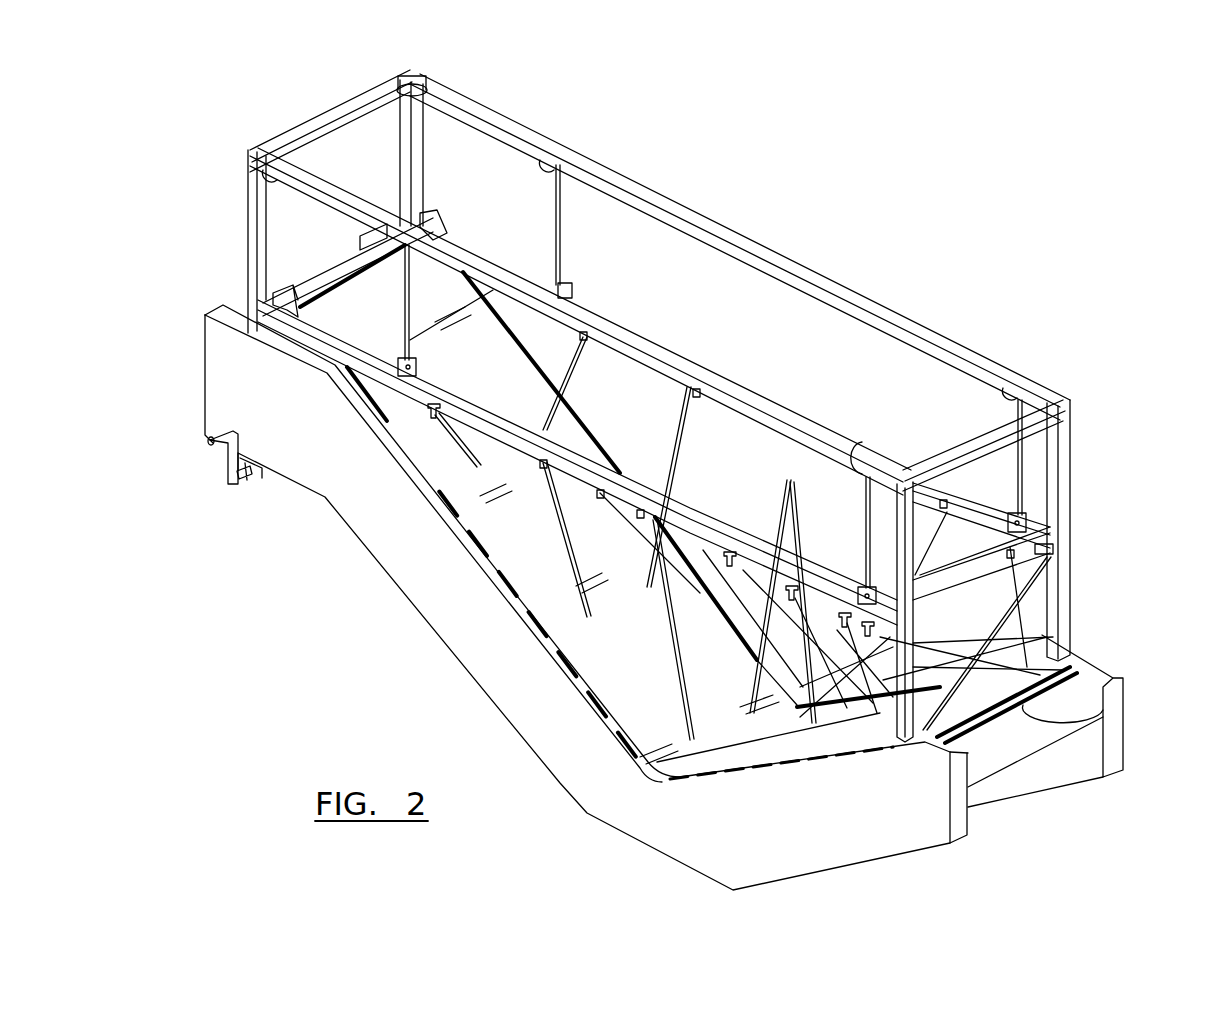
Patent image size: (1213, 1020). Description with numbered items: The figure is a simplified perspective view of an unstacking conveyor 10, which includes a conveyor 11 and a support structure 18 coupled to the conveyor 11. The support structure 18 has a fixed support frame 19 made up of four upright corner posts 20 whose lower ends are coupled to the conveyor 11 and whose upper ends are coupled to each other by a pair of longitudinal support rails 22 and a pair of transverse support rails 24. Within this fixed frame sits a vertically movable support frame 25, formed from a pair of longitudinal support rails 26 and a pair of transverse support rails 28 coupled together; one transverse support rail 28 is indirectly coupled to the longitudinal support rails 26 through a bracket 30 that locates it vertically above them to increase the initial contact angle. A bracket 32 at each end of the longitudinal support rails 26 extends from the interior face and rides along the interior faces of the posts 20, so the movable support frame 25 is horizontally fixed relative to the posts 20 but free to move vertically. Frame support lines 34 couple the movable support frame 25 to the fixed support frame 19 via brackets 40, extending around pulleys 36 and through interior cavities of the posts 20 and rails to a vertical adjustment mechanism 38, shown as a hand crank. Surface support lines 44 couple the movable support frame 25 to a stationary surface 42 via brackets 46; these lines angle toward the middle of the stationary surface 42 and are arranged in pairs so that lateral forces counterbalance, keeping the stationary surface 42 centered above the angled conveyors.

The unstacking conveyor 10 is at (243, 650).
The conveyor 11 is at (441, 625).
The support structure 18 is at (1102, 526).
The fixed support frame 19 is at (875, 300).
The upright corner post 20 is at (246, 228).
The longitudinal support rail 22 is at (742, 242).
The transverse support rail 24 is at (350, 108).
The vertically movable support frame 25 is at (578, 452).
The longitudinal support rail 26 is at (705, 518).
The transverse support rail 28 is at (332, 270).
The bracket 30 is at (270, 300).
The bracket 32 is at (1050, 550).
The frame support line 34 is at (563, 237).
The pulley 36 is at (421, 77).
The vertical adjustment mechanism 38 is at (258, 486).
The bracket 40 is at (571, 290).
The stationary surface 42 is at (1100, 717).
The surface support line 44 is at (650, 660).
The bracket 46 is at (680, 398).